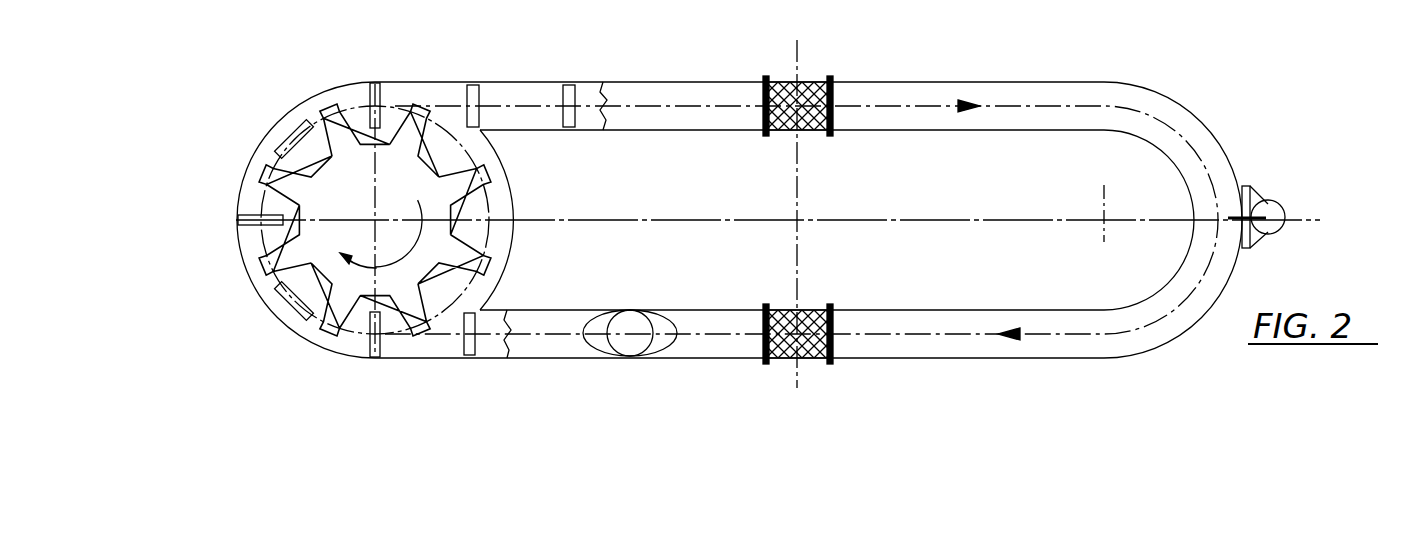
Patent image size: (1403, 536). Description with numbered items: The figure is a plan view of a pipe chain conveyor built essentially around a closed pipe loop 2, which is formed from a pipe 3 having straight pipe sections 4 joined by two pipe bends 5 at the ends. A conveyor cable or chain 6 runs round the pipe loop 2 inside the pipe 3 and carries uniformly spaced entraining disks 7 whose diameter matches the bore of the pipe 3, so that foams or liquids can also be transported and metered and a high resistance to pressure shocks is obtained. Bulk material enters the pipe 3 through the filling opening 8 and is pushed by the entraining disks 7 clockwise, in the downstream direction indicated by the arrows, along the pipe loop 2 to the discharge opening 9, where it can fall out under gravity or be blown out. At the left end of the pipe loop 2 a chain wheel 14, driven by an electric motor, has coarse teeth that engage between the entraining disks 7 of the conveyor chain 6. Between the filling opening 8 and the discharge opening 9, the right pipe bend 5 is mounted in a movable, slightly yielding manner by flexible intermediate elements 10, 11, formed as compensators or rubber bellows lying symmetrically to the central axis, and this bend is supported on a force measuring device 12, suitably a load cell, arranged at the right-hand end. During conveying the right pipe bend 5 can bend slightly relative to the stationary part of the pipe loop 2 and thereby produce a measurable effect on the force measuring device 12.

The pipe loop 2 is at (924, 70).
The pipe 3 is at (540, 122).
The straight pipe sections 4 is at (662, 83).
The pipe bend 5 is at (1193, 110).
The conveyor cable or chain 6 is at (442, 106).
The entraining disks 7 is at (483, 92).
The filling opening 8 is at (395, 92).
The discharge opening 9 is at (636, 318).
The flexible intermediate element 10 is at (782, 310).
The flexible intermediate element 11 is at (785, 82).
The force measuring device 12 is at (1280, 203).
The chain wheel 14 is at (348, 199).